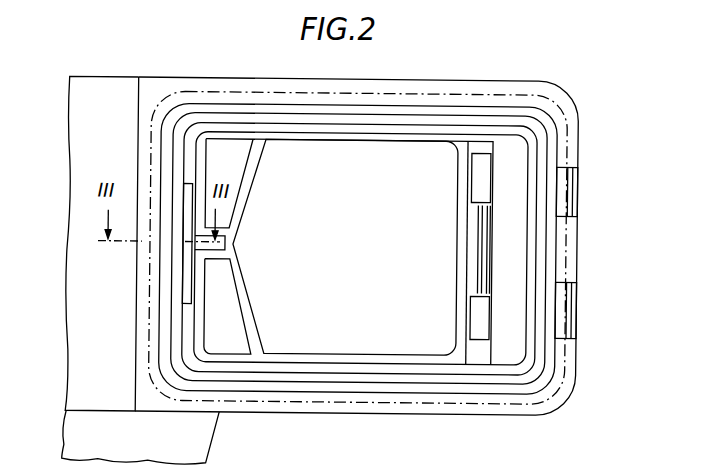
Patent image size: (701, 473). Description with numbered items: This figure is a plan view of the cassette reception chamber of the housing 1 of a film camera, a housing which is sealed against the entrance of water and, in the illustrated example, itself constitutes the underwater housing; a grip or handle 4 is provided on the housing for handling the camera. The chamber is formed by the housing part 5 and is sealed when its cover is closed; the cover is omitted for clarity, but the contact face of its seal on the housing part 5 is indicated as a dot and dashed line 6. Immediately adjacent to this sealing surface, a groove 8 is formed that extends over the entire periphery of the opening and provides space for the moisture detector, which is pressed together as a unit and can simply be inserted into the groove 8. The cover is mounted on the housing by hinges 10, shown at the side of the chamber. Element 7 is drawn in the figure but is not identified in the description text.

The housing 1 is at (550, 97).
The grip or handle 4 is at (199, 434).
The housing part 5 is at (161, 88).
The dot and dashed line 6 is at (231, 94).
The hinge plate 7 is at (478, 134).
The groove 8 is at (409, 108).
The hinges 10 is at (562, 177).